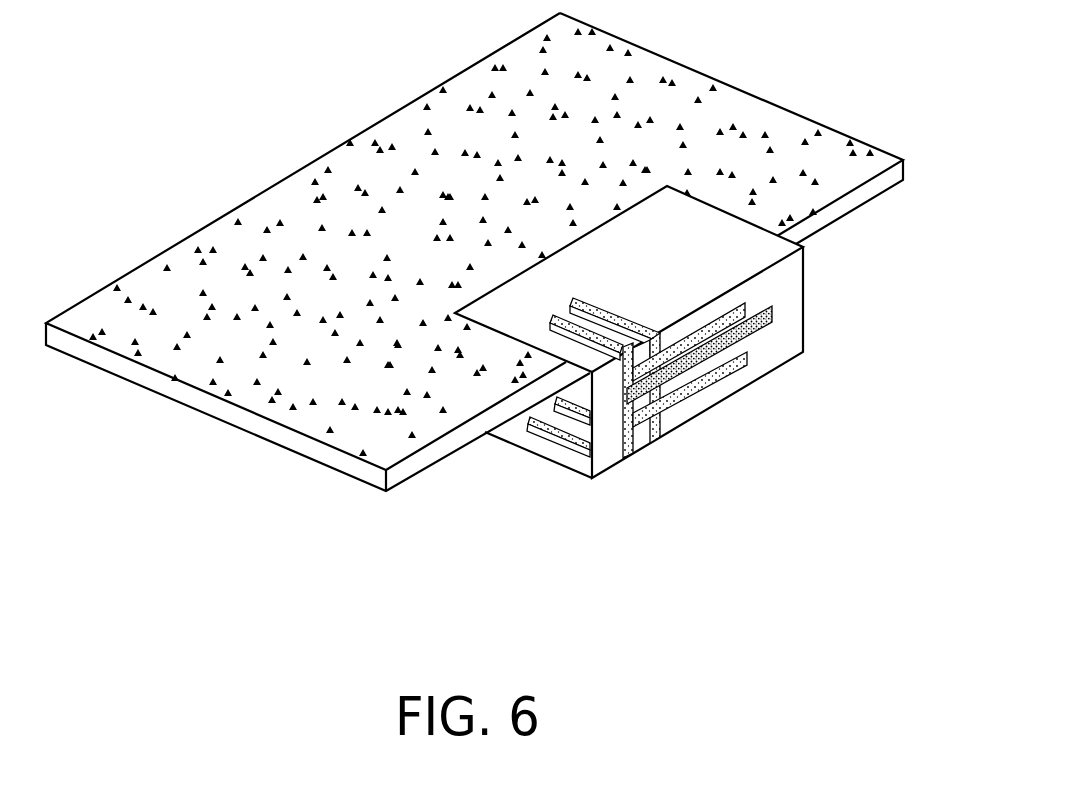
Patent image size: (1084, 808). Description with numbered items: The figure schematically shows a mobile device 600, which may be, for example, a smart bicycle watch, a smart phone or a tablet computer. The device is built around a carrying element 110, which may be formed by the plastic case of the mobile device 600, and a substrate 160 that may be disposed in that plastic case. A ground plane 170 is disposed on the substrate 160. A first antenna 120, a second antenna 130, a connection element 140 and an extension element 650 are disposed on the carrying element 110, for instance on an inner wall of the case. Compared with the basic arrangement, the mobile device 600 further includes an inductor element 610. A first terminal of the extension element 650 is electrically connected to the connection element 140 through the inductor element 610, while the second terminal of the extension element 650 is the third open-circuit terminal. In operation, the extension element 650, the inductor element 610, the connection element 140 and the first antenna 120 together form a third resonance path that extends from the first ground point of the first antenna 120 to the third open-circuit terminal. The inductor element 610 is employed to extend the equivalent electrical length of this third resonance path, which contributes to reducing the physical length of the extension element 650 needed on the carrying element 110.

The mobile device 600 is at (486, 309).
The carrying element 110 is at (806, 274).
The first antenna 120 is at (670, 295).
The second antenna 130 is at (741, 412).
The connection element 140 is at (621, 408).
The substrate 160 is at (903, 167).
The ground plane 170 is at (753, 110).
The inductor element 610 is at (657, 410).
The extension element 650 is at (763, 327).